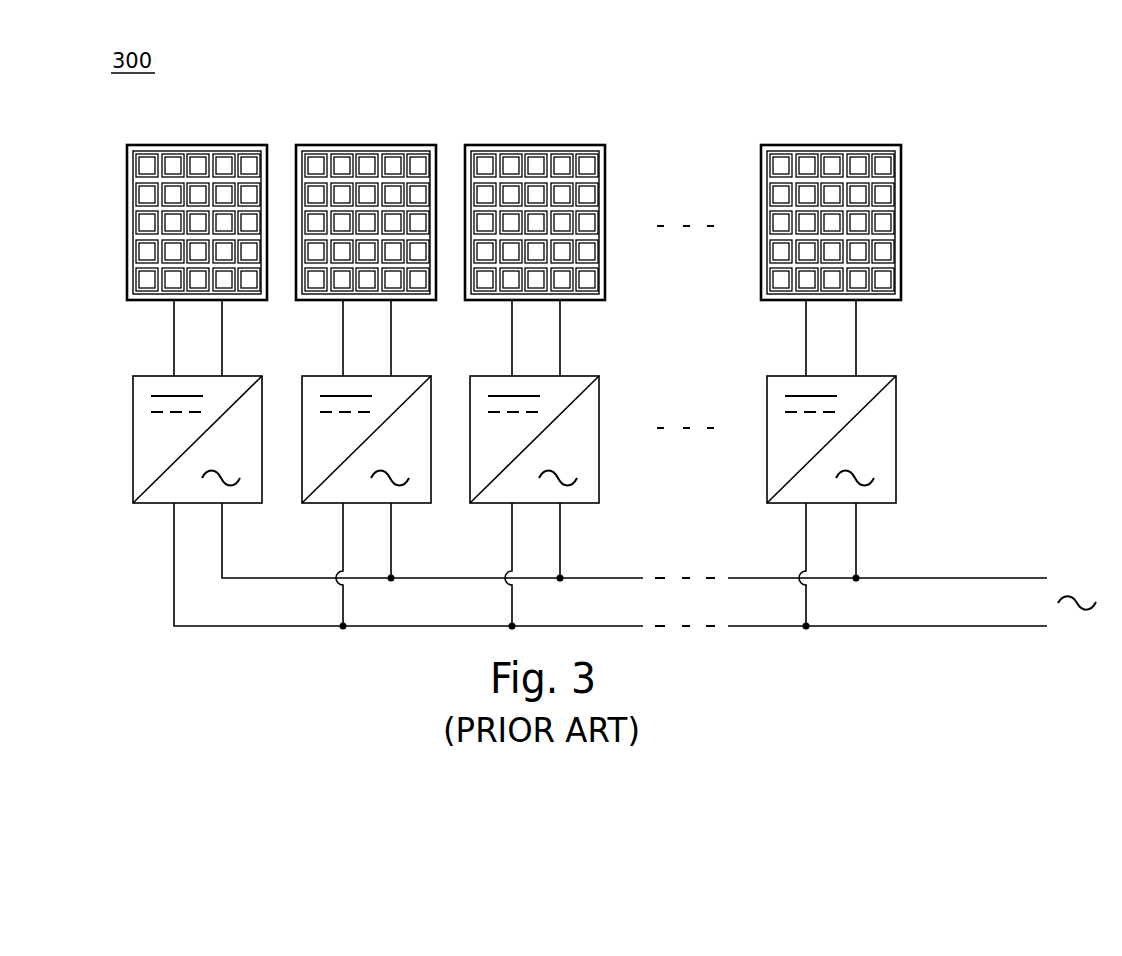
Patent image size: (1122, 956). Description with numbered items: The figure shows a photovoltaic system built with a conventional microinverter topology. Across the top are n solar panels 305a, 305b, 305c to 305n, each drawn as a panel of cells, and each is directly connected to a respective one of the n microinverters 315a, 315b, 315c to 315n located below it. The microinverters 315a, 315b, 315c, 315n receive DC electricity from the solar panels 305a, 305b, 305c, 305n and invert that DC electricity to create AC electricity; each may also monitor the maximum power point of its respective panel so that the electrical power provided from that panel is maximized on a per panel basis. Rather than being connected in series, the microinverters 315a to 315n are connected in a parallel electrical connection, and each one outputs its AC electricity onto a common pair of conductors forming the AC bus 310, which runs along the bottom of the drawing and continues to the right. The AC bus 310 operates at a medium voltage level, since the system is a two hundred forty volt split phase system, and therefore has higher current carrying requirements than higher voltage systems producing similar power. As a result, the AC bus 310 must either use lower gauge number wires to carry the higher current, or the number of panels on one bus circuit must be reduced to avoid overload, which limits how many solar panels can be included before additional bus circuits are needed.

The solar panel 305a is at (190, 145).
The solar panel 305b is at (360, 145).
The solar panel 305c is at (545, 145).
The solar panel 305n is at (847, 145).
The microinverter 315a is at (138, 375).
The microinverter 315b is at (320, 375).
The microinverter 315c is at (488, 375).
The microinverter 315n is at (881, 375).
The AC bus 310 is at (263, 628).